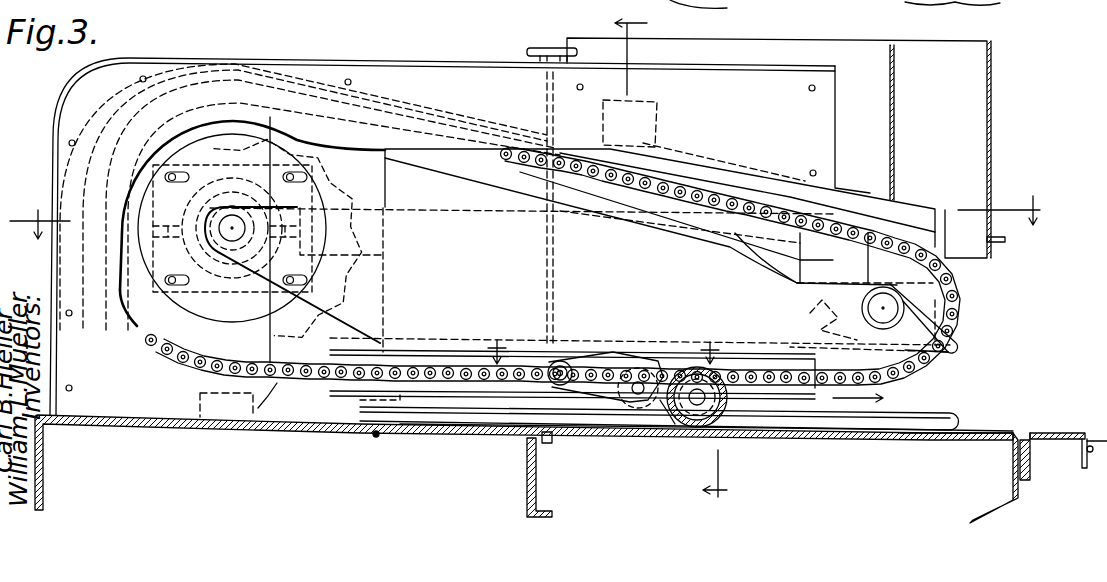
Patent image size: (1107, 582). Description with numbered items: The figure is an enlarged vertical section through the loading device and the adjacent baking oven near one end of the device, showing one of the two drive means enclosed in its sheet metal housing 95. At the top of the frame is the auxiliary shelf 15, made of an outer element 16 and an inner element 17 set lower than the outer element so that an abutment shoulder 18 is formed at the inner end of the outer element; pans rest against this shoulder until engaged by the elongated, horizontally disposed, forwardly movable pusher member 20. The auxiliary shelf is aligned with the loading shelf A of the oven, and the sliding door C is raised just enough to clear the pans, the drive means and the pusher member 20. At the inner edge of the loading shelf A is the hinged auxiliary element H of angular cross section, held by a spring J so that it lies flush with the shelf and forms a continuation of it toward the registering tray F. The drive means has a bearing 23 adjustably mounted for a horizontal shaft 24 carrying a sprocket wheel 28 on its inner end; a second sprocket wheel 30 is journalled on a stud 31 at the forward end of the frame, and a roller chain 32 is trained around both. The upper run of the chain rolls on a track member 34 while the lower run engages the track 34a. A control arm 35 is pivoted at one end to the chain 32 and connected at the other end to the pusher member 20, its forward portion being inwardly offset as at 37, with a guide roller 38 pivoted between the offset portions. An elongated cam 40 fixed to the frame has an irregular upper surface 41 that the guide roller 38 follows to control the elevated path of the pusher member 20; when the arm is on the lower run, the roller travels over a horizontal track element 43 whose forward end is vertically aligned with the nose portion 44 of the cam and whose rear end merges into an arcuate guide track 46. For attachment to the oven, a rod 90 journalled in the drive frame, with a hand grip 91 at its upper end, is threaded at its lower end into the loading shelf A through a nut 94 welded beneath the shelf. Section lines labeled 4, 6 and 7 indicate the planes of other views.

The sheet metal housing 95 is at (168, 52).
The hand grip 91 is at (530, 48).
The section line 6 is at (671, 258).
The section line 4 is at (533, 217).
The section line 7 is at (603, 340).
The vertically sliding door C is at (965, 103).
The rod 90 is at (548, 262).
The roller chain 32 is at (670, 182).
The cam 40 is at (410, 220).
The upper surface of cam 41 is at (483, 202).
The horizontal shaft 24 is at (207, 220).
The bearing 23 is at (310, 257).
The sprocket wheel 28 is at (182, 328).
The track member 34 is at (745, 243).
The track 34a is at (432, 358).
The sprocket wheel 30 is at (917, 285).
The stud 31 is at (905, 277).
The nose portion 44 is at (960, 348).
The control arm 35 is at (583, 368).
The guide roller 38 is at (637, 407).
The pusher member 20 is at (693, 428).
The inwardly offset portion 37 is at (655, 412).
The track element 43 is at (855, 412).
The outer element 16 is at (146, 421).
The auxiliary shelf 15 is at (312, 426).
The arcuate guide track 46 is at (263, 420).
The abutment shoulder 18 is at (374, 437).
The inner element 17 is at (414, 438).
The nut 94 is at (548, 441).
The spring J is at (1012, 457).
The tray F is at (1082, 458).
The auxiliary element H is at (1049, 434).
The loading shelf A is at (933, 437).